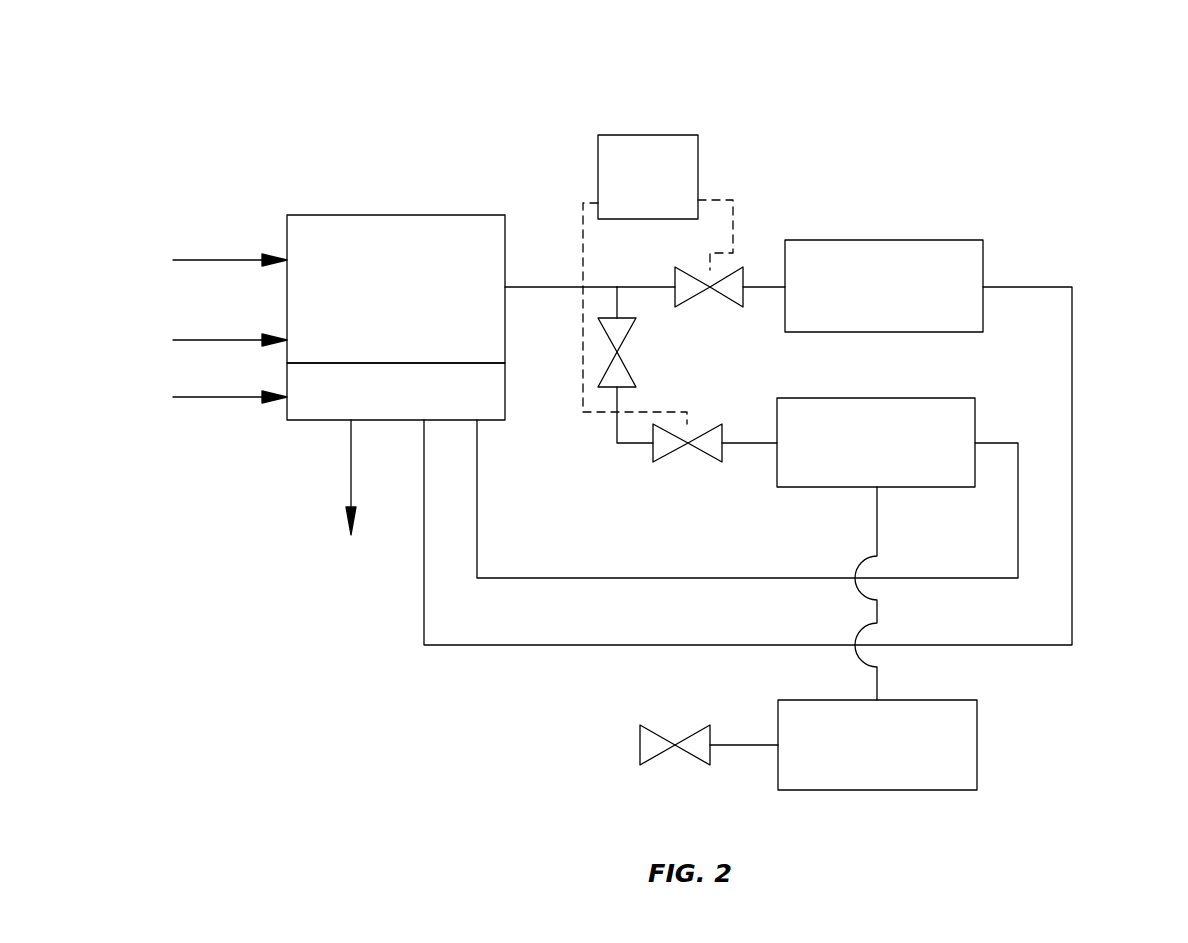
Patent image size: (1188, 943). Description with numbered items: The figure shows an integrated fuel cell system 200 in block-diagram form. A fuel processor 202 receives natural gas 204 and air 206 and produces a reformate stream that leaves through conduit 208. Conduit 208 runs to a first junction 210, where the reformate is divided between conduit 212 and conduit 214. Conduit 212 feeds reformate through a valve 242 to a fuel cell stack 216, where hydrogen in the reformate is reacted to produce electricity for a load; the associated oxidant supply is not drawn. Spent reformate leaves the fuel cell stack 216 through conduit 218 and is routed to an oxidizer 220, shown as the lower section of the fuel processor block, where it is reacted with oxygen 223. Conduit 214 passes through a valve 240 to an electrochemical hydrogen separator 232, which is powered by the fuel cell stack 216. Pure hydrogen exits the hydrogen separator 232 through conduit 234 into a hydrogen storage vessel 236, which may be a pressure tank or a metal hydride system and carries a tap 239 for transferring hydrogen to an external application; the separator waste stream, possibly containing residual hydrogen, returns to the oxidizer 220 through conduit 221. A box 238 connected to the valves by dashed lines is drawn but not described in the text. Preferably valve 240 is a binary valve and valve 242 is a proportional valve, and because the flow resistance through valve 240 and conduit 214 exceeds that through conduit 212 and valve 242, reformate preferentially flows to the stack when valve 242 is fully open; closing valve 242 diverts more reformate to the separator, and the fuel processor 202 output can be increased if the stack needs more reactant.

The integrated fuel cell system 200 is at (1075, 89).
The fuel processor 202 is at (396, 289).
The natural gas 204 is at (230, 248).
The air 206 is at (230, 328).
The conduit 208 is at (536, 230).
The first junction 210 is at (536, 227).
The conduit 212 is at (672, 319).
The conduit 214 is at (655, 339).
The fuel cell stack 216 is at (884, 286).
The conduit 218 is at (784, 438).
The oxidizer 220 is at (396, 449).
The conduit 221 is at (823, 499).
The oxygen 223 is at (230, 385).
The hydrogen separator 232 is at (814, 442).
The conduit 234 is at (1012, 588).
The hydrogen storage vessel 236 is at (877, 745).
The controller 238 is at (640, 279).
The tap 239 is at (659, 758).
The valve 240 is at (647, 352).
The valve 242 is at (754, 251).